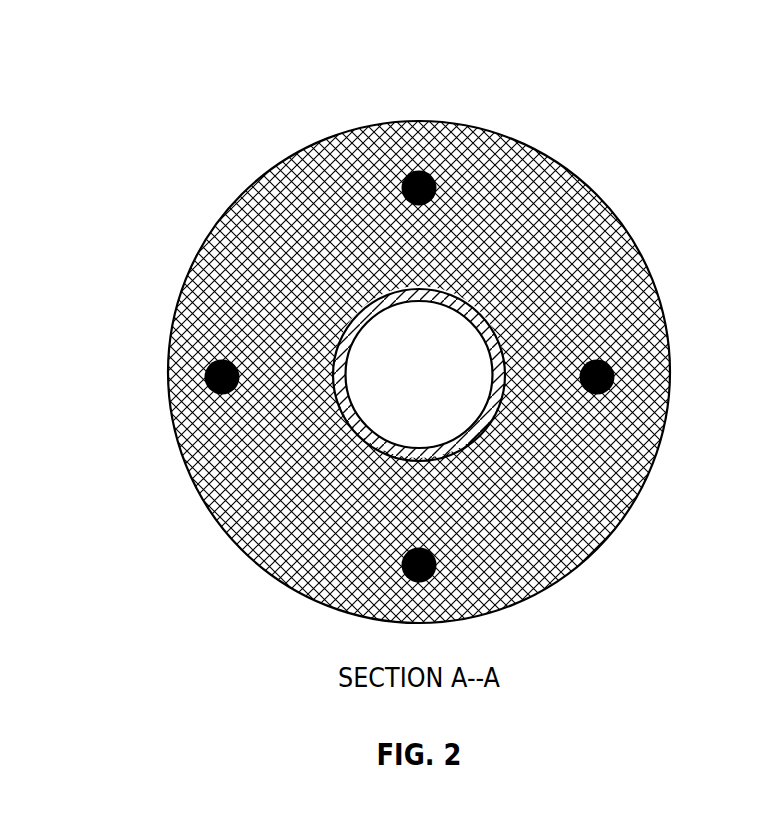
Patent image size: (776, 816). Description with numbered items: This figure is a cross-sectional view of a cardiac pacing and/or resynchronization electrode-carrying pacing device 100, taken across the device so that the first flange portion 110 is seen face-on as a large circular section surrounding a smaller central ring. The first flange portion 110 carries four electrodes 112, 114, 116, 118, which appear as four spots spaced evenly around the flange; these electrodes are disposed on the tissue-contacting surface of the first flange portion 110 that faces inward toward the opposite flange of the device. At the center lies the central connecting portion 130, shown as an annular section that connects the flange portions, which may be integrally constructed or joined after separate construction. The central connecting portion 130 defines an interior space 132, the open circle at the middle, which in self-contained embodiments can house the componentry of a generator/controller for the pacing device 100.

The pacing device 100 is at (410, 351).
The first flange portion 110 is at (227, 212).
The electrode 112 is at (207, 383).
The electrode 114 is at (403, 573).
The electrode 116 is at (613, 366).
The electrode 118 is at (410, 168).
The central connecting portion 130 is at (337, 341).
The interior space 132 is at (441, 390).